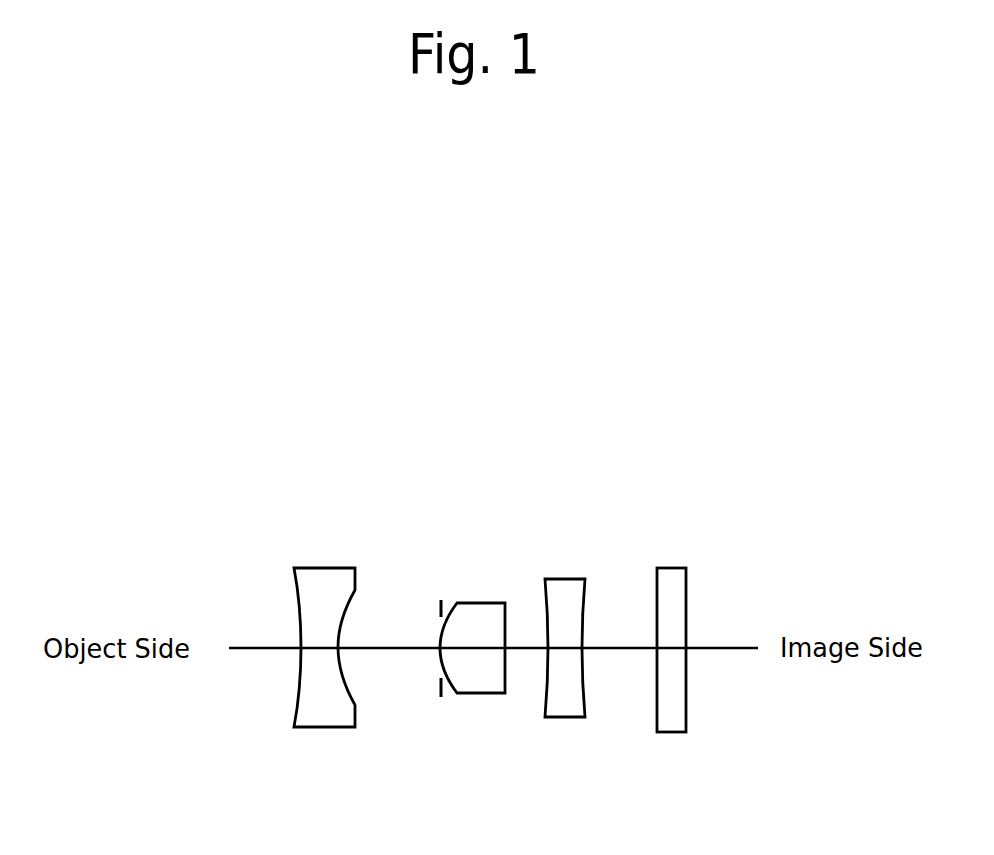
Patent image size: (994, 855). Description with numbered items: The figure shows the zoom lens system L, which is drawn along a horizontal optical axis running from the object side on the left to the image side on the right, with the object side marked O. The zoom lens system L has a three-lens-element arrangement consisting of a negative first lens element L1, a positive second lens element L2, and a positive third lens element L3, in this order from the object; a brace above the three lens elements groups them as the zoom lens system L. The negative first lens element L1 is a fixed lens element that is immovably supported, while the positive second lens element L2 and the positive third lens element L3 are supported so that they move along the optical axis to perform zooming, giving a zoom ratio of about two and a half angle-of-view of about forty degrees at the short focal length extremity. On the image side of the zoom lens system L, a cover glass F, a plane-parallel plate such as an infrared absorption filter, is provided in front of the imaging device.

The optical axis (object side) O is at (258, 650).
The zoom lens system L is at (618, 413).
The negative first lens element L1 is at (327, 588).
The positive second lens element L2 is at (488, 630).
The positive third lens element L3 is at (563, 613).
The cover glass F is at (677, 603).